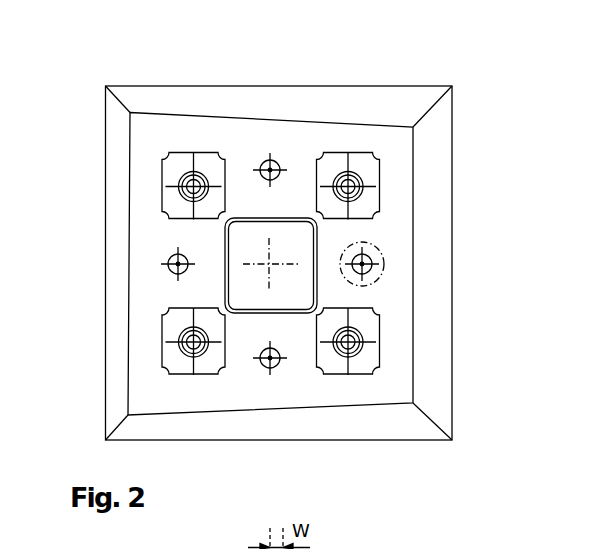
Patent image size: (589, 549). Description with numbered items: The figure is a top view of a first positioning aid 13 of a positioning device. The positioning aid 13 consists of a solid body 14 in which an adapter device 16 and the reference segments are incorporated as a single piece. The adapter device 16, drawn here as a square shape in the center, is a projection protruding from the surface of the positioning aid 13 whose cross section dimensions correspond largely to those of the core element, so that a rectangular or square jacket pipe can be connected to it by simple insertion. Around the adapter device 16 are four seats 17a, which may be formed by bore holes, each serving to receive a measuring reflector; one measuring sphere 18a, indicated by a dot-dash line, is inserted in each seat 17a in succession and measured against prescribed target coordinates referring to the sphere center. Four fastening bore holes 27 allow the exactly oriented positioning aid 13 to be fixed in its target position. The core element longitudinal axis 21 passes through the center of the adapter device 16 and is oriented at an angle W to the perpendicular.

The first positioning aid 13 is at (437, 266).
The solid body 14 is at (403, 275).
The adapter device 16 is at (288, 232).
The seat 17a is at (380, 247).
The measuring sphere 18a is at (385, 273).
The core element longitudinal axis 21 is at (269, 264).
The fastening bore holes 27 is at (360, 172).